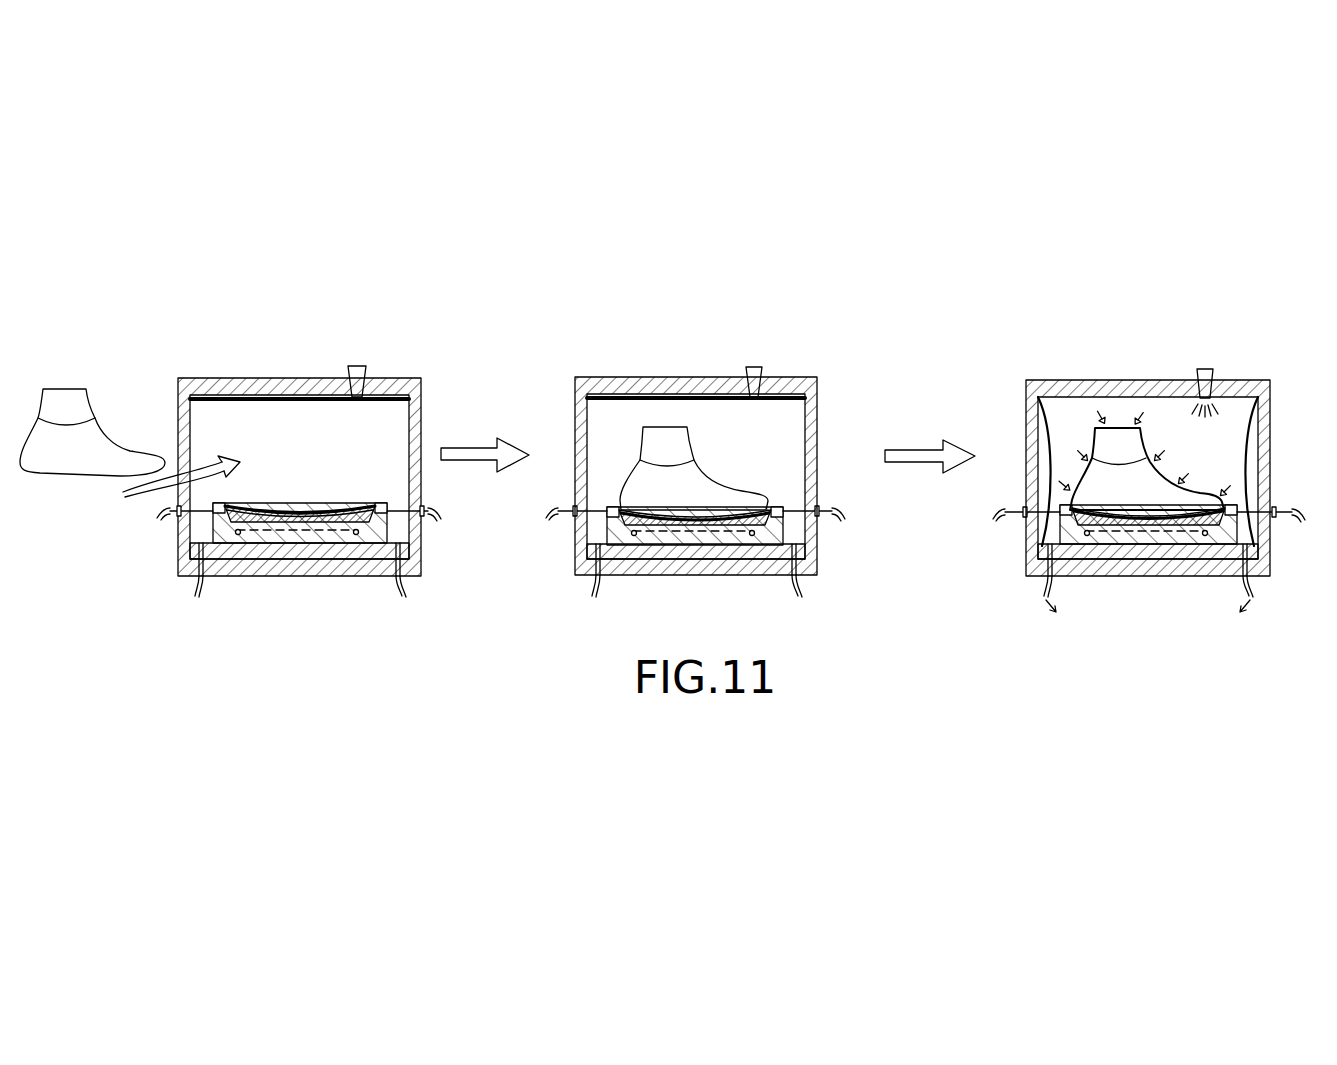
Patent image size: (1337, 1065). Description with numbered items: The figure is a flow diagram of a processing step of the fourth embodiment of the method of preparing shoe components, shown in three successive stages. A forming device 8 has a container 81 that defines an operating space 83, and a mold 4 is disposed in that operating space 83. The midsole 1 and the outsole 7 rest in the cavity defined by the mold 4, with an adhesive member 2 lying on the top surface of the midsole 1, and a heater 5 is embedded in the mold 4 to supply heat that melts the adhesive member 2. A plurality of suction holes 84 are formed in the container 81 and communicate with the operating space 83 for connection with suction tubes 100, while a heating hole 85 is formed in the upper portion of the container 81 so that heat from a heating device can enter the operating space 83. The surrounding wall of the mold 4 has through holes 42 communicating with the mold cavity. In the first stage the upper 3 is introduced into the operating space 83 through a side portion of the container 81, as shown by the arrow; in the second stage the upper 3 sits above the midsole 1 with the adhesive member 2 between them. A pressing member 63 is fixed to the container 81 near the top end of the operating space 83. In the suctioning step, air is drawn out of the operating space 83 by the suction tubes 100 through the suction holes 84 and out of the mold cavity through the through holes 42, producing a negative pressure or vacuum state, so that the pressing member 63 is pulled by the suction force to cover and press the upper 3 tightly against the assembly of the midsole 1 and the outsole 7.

The midsole 1 is at (378, 513).
The adhesive member 2 is at (360, 506).
The upper 3 is at (115, 440).
The mold 4 is at (225, 528).
The heater 5 is at (283, 545).
The outsole 7 is at (342, 520).
The forming device 8 is at (324, 412).
The through hole 42 is at (215, 507).
The pressing member 63 is at (300, 398).
The container 81 is at (421, 400).
The operating space 83 is at (371, 420).
The suction hole 84 is at (195, 545).
The heating hole 85 is at (357, 385).
The suction tube 100 is at (165, 512).